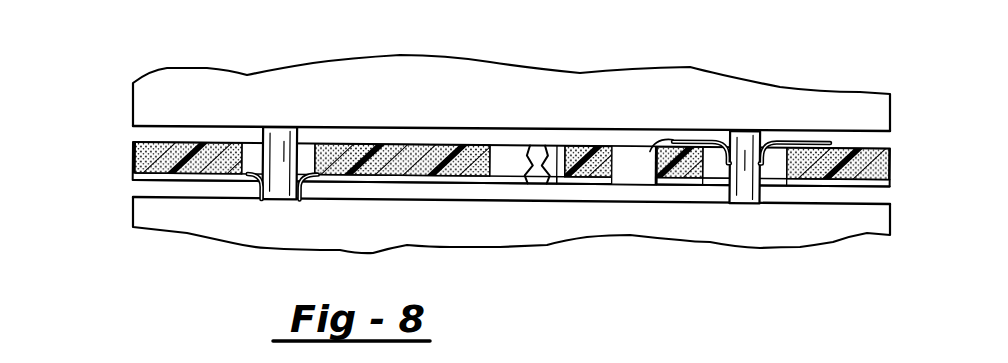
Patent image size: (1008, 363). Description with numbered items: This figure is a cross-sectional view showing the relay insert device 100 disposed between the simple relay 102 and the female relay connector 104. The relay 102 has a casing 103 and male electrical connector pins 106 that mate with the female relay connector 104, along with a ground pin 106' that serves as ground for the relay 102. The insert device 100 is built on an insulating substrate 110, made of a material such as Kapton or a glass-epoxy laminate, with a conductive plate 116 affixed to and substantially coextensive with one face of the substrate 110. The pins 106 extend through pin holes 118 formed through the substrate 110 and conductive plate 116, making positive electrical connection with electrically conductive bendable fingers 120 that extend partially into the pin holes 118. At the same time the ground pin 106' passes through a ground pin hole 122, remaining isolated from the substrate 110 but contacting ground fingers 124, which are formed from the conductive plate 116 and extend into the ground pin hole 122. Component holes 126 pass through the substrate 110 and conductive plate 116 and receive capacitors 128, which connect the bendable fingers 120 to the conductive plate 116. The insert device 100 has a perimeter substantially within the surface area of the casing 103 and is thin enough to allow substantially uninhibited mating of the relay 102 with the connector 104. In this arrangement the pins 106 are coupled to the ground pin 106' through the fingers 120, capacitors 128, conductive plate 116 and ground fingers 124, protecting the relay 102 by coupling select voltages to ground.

The relay insert device 100 is at (112, 196).
The simple relay 102 is at (155, 45).
The casing 103 is at (250, 88).
The female relay connector 104 is at (258, 270).
The electrical connector pins 106 is at (737, 149).
The ground pin 106' is at (314, 144).
The substrate 110 is at (133, 156).
The conductive plate 116 is at (195, 178).
The pin holes 118 is at (716, 194).
The electrically conductive bendable fingers 120 is at (676, 146).
The ground pin hole 122 is at (250, 125).
The ground fingers 124 is at (308, 188).
The component holes 126 is at (613, 198).
The capacitors 128 is at (640, 158).